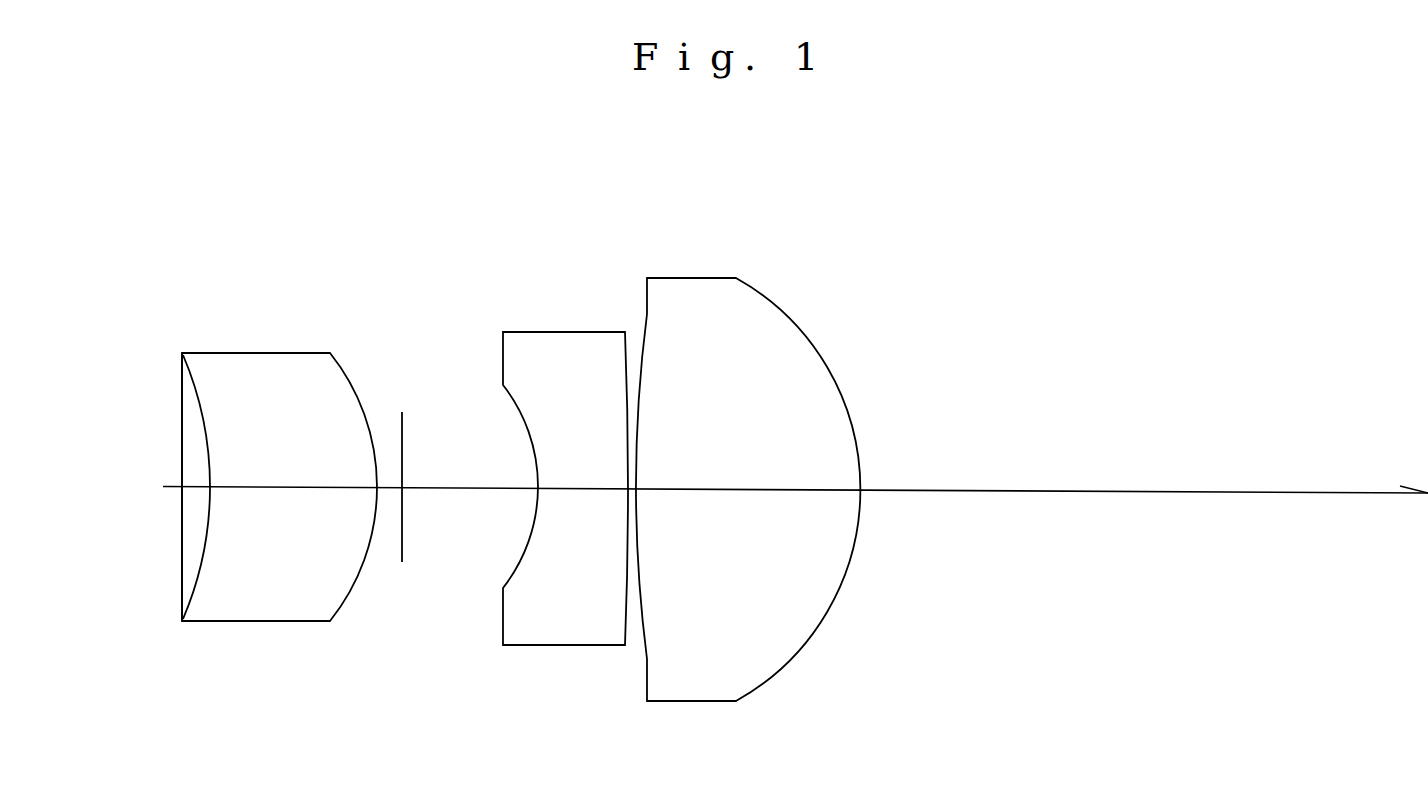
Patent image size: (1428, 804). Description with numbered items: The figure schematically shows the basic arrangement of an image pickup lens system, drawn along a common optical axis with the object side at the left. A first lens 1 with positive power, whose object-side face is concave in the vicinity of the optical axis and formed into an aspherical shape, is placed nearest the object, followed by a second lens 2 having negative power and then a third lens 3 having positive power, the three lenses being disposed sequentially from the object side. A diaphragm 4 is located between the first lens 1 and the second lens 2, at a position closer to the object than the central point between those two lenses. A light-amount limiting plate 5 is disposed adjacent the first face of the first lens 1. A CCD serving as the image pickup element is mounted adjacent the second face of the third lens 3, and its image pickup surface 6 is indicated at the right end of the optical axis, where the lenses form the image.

The first lens 1 is at (268, 353).
The second lens 2 is at (558, 332).
The third lens 3 is at (696, 278).
The diaphragm 4 is at (402, 433).
The light-amount limiting plate 5 is at (182, 422).
The image pickup surface 6 is at (1427, 394).